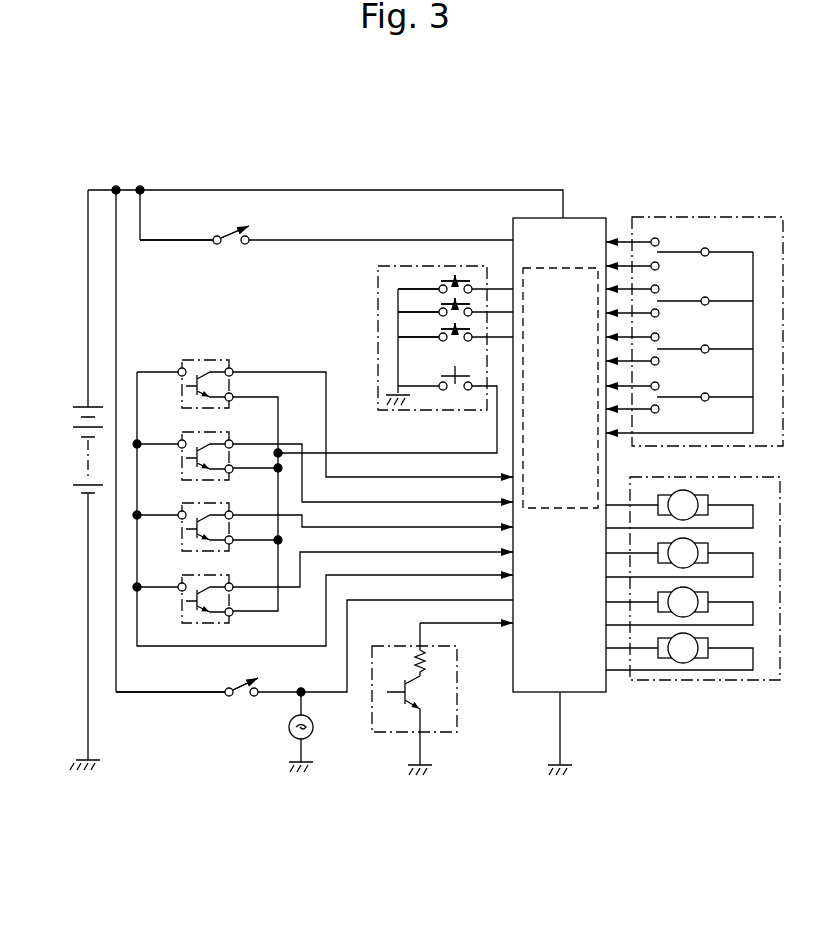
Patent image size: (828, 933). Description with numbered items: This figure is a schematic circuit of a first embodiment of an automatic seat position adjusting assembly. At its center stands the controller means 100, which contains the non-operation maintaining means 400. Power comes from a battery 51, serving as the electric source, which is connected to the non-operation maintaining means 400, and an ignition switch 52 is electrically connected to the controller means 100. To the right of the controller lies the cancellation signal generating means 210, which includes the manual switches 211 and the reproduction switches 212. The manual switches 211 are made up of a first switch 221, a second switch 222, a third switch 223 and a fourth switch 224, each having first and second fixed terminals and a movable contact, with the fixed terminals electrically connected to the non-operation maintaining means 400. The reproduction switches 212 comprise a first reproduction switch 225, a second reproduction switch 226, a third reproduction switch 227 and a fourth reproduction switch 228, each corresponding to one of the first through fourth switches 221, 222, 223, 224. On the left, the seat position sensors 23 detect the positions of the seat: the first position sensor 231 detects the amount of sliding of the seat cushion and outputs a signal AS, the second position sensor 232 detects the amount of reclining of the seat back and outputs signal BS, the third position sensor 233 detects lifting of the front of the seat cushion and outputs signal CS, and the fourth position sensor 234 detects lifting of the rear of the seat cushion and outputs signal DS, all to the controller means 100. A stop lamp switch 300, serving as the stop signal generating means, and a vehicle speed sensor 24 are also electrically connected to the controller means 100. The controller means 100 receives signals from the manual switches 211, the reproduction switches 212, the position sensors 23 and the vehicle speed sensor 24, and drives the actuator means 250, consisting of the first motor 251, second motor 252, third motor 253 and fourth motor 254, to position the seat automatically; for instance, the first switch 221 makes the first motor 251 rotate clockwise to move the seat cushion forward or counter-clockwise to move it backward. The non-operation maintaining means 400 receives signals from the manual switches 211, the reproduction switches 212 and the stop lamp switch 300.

The battery 51 is at (82, 450).
The ignition switch 52 is at (232, 244).
The stop lamp switch 300 is at (240, 698).
The seat position sensors 23 is at (277, 490).
The first position sensor 231 is at (188, 398).
The second position sensor 232 is at (190, 626).
The third position sensor 233 is at (178, 466).
The fourth position sensor 234 is at (180, 540).
The vehicle speed sensor 24 is at (453, 715).
The controller means 100 is at (584, 451).
The non-operation maintaining means 400 is at (568, 268).
The cancellation signal generating means 210 is at (540, 282).
The reproduction switches 212 is at (405, 299).
The first reproduction switch 225 is at (447, 281).
The second reproduction switch 226 is at (455, 394).
The third reproduction switch 227 is at (440, 303).
The fourth reproduction switch 228 is at (455, 338).
The manual switches 211 is at (694, 284).
The first switch 221 is at (668, 252).
The second switch 222 is at (668, 396).
The third switch 223 is at (668, 300).
The fourth switch 224 is at (668, 348).
The actuator means 250 is at (693, 614).
The first motor 251 is at (708, 497).
The second motor 252 is at (705, 658).
The third motor 253 is at (708, 545).
The fourth motor 254 is at (708, 594).